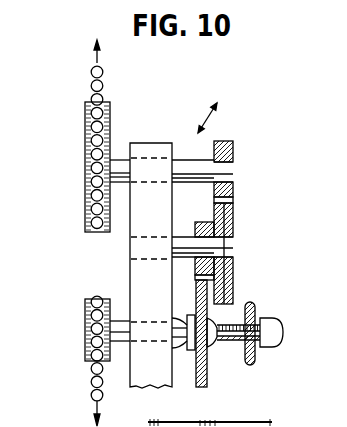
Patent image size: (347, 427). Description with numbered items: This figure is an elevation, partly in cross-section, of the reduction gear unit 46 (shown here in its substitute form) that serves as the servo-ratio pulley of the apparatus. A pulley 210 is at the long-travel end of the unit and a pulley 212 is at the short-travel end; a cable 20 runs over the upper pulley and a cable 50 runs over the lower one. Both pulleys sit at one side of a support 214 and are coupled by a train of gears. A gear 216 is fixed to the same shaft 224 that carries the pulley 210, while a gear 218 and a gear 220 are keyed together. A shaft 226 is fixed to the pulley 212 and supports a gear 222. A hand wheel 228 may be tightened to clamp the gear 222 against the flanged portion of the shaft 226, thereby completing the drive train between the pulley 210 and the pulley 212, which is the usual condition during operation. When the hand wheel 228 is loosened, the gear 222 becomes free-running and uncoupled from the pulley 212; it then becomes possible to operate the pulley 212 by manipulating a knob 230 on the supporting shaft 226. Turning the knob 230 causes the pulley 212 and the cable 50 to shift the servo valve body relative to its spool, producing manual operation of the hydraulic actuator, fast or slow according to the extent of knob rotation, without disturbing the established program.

The cable 20 is at (91, 82).
The pulley 210 is at (85, 193).
The support 214 is at (152, 142).
The shaft 224 is at (196, 160).
The reduction gear unit 46 is at (222, 110).
The gear 216 is at (234, 152).
The gear 218 is at (236, 213).
The gear 220 is at (198, 230).
The gear 222 is at (207, 371).
The hand wheel 228 is at (251, 303).
The knob 230 is at (279, 342).
The shaft 226 is at (120, 322).
The pulley 212 is at (87, 346).
The cable 50 is at (88, 382).